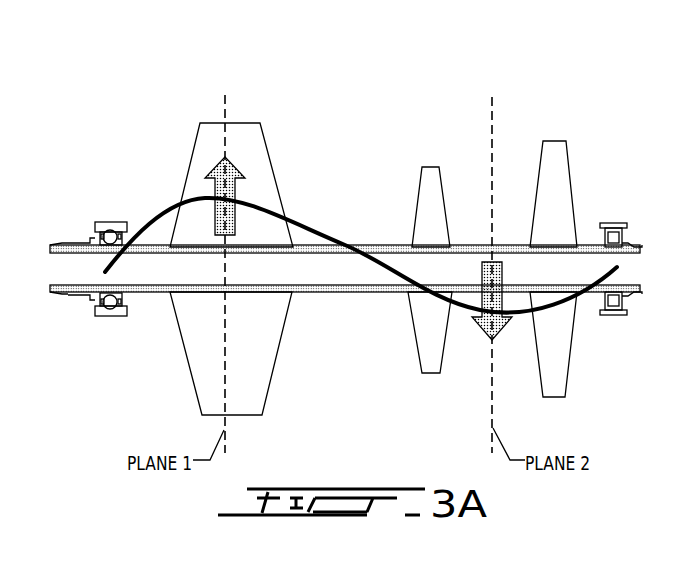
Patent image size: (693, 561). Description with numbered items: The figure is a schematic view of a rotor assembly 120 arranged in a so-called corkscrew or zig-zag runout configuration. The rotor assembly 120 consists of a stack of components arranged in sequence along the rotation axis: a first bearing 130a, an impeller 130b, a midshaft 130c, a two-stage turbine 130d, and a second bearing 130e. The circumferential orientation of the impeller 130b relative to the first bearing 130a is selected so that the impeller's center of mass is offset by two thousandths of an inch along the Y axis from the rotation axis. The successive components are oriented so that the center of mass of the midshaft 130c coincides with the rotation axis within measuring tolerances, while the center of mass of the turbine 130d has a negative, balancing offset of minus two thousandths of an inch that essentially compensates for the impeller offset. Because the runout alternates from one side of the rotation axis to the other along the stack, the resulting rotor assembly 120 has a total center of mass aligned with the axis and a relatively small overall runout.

The rotor assembly 120 is at (460, 107).
The #1 bearing 130a is at (110, 222).
The impeller 130b is at (255, 137).
The midshaft 130c is at (365, 247).
The two-stage turbine 130d is at (558, 148).
The #2 bearing 130e is at (617, 223).